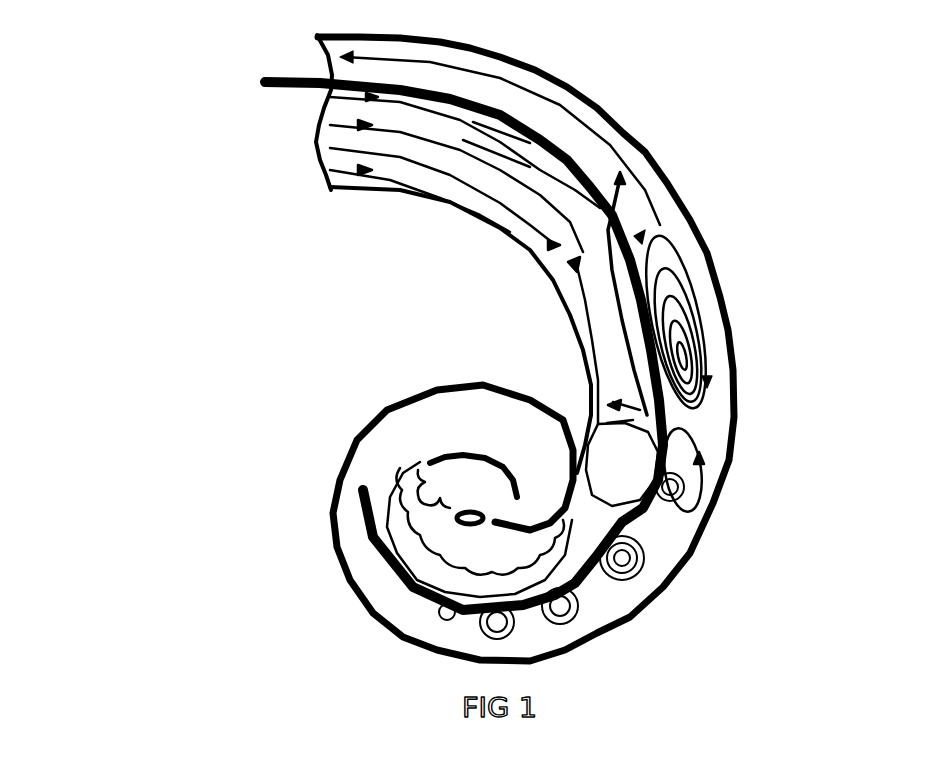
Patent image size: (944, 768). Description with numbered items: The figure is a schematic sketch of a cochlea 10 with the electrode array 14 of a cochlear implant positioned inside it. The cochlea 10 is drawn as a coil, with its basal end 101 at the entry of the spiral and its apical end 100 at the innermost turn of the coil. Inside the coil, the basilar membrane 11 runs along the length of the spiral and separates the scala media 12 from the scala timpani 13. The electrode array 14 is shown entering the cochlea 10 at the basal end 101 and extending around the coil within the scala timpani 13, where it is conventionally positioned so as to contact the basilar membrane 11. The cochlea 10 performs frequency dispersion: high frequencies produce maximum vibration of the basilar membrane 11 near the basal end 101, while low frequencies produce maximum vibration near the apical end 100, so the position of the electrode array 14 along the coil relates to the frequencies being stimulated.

The cochlea 10 is at (392, 349).
The apical end 100 is at (358, 448).
The basal end 101 is at (401, 113).
The basilar membrane 11 is at (275, 142).
The scala media 12 is at (460, 330).
The scala timpani 13 is at (724, 298).
The electrode array 14 is at (403, 346).